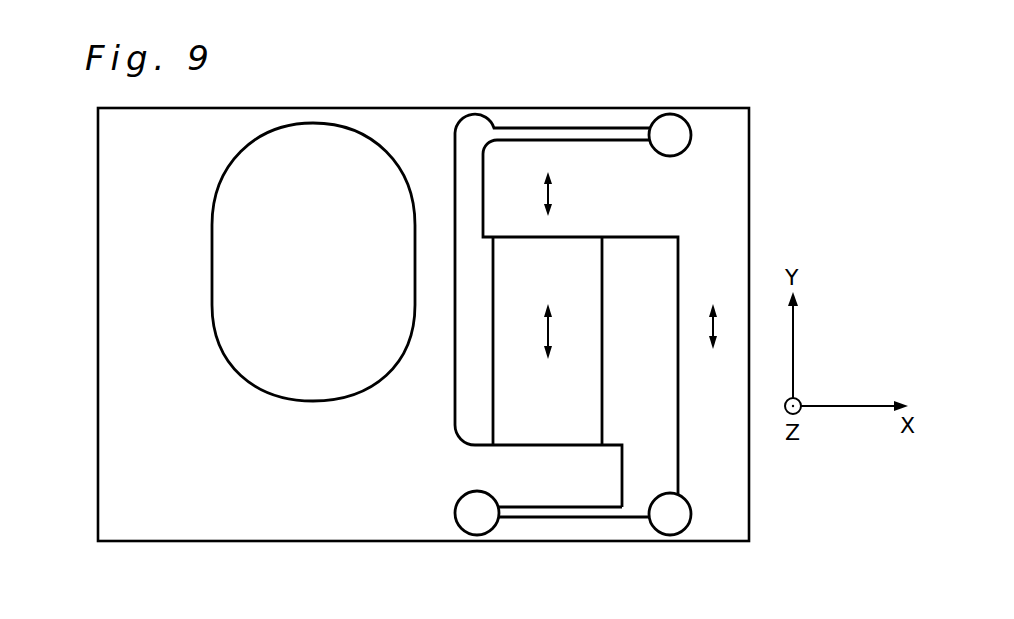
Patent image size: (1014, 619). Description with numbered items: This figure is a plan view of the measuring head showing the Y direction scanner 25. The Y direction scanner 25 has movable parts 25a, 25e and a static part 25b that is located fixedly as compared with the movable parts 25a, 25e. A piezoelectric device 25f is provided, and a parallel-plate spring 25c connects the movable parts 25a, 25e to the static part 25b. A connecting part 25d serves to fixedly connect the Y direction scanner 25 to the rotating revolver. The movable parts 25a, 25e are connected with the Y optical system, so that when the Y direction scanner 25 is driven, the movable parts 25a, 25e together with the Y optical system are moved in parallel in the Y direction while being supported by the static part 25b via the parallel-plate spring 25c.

The Y direction scanner 25 is at (728, 216).
The movable part 25a is at (635, 178).
The static part 25b is at (365, 438).
The parallel-plate spring 25c is at (580, 115).
The connecting part 25d is at (272, 260).
The movable part 25e is at (723, 439).
The piezoelectric device 25f is at (528, 402).